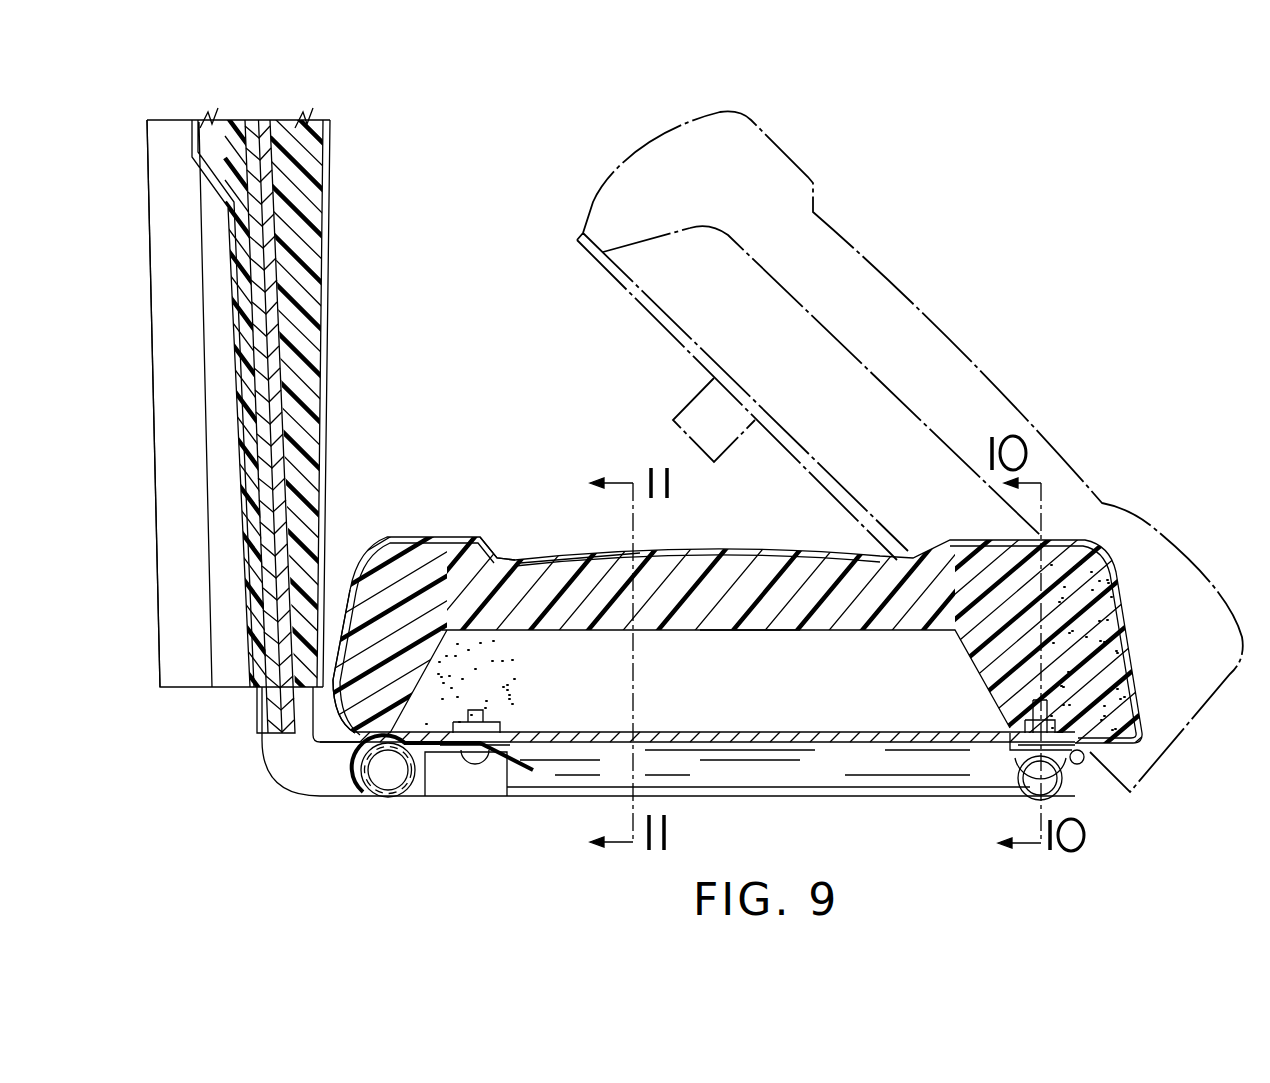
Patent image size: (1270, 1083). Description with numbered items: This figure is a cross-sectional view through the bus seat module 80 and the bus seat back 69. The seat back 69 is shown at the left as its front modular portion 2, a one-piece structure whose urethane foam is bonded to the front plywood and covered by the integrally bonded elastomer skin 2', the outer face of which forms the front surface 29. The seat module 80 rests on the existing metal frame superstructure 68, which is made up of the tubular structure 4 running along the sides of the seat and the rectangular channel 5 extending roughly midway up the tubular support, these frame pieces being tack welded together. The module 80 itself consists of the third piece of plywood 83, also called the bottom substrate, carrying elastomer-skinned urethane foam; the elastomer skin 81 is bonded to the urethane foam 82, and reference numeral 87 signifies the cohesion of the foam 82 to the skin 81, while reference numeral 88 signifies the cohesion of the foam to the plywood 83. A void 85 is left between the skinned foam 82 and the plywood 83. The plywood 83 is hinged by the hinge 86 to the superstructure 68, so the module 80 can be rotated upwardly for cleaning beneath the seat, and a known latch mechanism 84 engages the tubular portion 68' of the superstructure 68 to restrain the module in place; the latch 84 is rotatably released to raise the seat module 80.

The front modular portion 2 is at (287, 359).
The elastomer skin 2' is at (299, 445).
The front surface 29 is at (328, 345).
The bus seat back 69 is at (263, 103).
The bus seat module 80 is at (907, 279).
The elastomer skin 81 is at (488, 540).
The urethane foam 82 is at (537, 568).
The third piece of plywood 83 is at (706, 735).
The latch mechanism 84 is at (418, 787).
The void 85 is at (813, 712).
The hinge 86 is at (1082, 765).
The cohesion of urethane foam to elastomer skin 87 is at (745, 556).
The cohesion of urethane foam to plywood 88 is at (373, 720).
The superstructure 68 is at (717, 830).
The tubular portion 68' is at (308, 764).
The tubular structure 4 is at (910, 773).
The rectangular channel 5 is at (487, 787).